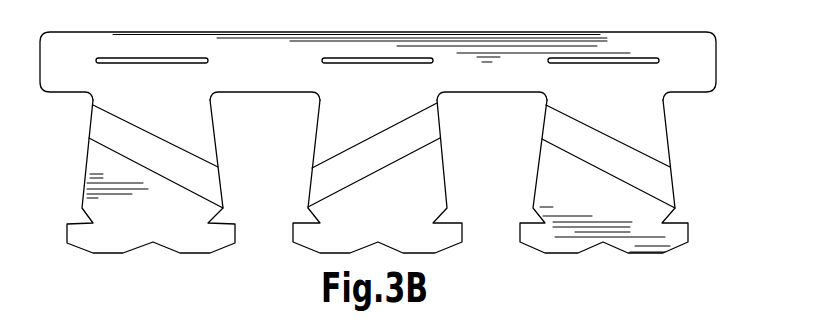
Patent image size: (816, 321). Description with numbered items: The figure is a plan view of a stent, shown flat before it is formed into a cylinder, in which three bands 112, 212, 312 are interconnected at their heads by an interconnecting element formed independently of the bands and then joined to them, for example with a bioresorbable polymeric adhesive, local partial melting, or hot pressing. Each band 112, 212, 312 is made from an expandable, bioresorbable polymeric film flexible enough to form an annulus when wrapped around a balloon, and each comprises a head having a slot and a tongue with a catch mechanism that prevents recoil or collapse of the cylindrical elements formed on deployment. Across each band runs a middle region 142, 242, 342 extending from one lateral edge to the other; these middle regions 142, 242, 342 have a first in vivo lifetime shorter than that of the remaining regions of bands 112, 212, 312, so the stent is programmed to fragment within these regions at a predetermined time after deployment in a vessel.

The band 112 is at (115, 165).
The middle region 142 is at (170, 160).
The band 212 is at (352, 123).
The middle region 242 is at (398, 150).
The band 312 is at (640, 143).
The middle region 342 is at (593, 150).